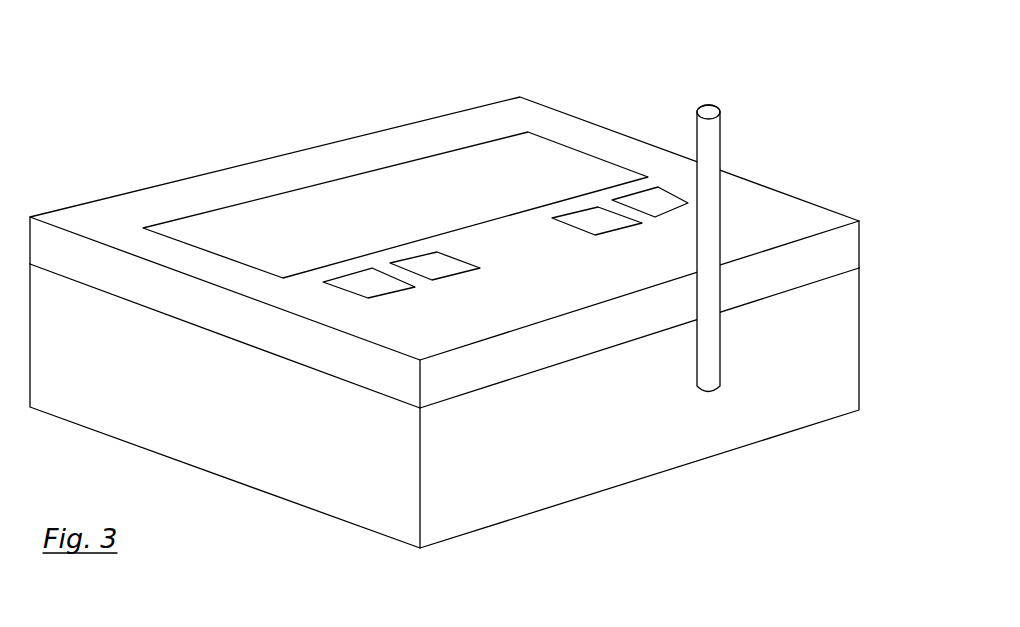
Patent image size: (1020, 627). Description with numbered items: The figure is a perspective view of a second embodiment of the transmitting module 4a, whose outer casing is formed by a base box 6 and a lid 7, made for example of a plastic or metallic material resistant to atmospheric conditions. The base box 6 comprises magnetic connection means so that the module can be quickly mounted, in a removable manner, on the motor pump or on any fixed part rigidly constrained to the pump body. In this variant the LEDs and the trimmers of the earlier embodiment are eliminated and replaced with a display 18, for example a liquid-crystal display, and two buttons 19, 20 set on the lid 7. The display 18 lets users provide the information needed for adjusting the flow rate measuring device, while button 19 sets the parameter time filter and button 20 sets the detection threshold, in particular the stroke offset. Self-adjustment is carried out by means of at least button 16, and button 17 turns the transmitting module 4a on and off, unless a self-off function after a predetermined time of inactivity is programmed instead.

The base box 6 is at (538, 485).
The lid 7 is at (118, 212).
The display 18 is at (387, 185).
The button 19 is at (362, 285).
The button 20 is at (437, 263).
The button 16 is at (593, 217).
The button 17 is at (662, 205).
The transmitting module 4a is at (774, 108).